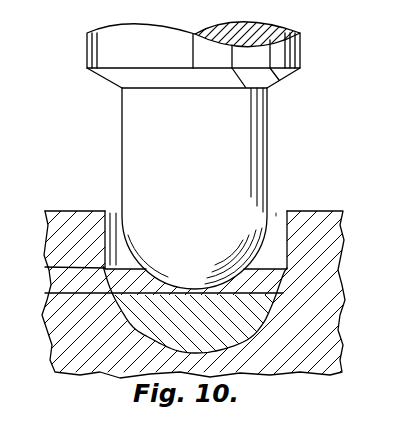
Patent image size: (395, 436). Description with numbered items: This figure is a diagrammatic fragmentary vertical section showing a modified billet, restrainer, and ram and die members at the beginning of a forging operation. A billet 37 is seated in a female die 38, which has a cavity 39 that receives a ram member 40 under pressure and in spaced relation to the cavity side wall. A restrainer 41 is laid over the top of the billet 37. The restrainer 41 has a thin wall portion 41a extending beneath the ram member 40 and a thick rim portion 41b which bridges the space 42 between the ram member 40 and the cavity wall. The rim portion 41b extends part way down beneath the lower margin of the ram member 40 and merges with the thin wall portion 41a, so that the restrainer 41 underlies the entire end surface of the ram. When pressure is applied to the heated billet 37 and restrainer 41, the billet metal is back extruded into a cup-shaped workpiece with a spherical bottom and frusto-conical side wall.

The billet 37 is at (150, 328).
The female die 38 is at (332, 218).
The cavity 39 is at (275, 218).
The ram member 40 is at (268, 235).
The restrainer 41 is at (110, 292).
The thin wall portion 41a is at (117, 304).
The thick rim portion 41b is at (45, 267).
The space 42 is at (277, 255).